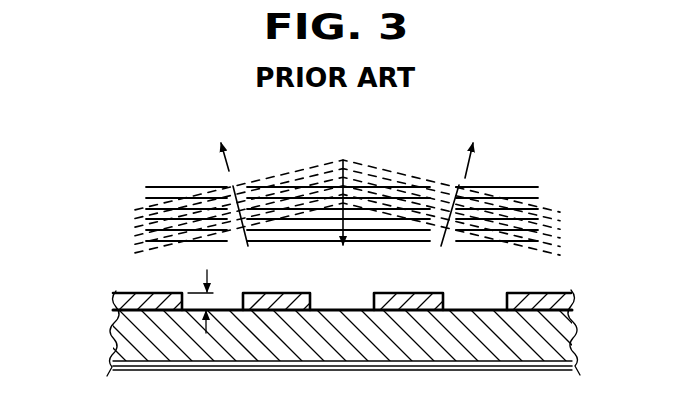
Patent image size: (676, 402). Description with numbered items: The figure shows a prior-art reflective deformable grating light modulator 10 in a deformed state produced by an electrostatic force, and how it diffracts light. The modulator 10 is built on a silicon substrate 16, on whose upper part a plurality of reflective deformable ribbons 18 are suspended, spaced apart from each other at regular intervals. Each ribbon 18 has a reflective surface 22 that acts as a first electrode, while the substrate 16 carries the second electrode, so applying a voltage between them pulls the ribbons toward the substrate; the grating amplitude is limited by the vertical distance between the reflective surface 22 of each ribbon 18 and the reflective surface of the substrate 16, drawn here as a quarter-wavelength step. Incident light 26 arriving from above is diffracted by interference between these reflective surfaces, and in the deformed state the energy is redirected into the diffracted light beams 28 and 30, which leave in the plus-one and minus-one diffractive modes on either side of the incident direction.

The reflective deformable grating light modulator 10 is at (100, 291).
The silicon substrate 16 is at (575, 322).
The reflective deformable ribbons 18 is at (571, 300).
The reflective surface 22 is at (544, 292).
The incident light 26 is at (581, 193).
The +1 mode diffracted light beam 28 is at (229, 171).
The −1 mode diffracted light beam 30 is at (470, 160).